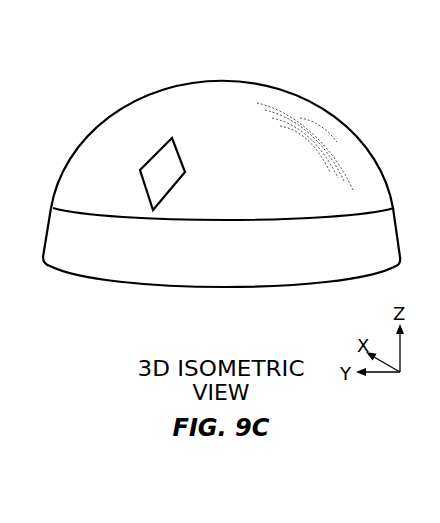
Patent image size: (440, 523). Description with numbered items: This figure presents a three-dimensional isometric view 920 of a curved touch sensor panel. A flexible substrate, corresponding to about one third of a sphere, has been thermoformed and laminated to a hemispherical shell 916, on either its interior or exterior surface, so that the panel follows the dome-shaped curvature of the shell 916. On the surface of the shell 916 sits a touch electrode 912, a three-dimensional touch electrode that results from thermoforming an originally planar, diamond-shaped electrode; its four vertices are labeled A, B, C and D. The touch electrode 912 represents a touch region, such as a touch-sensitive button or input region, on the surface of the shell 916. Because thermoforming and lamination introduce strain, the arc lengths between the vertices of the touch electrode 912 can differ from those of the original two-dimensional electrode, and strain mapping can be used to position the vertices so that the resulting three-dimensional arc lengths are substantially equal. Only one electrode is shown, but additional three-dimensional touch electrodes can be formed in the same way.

The three-dimensional isometric view 920 is at (97, 13).
The touch electrode 912 is at (153, 172).
The hemispherical shell 916 is at (62, 303).